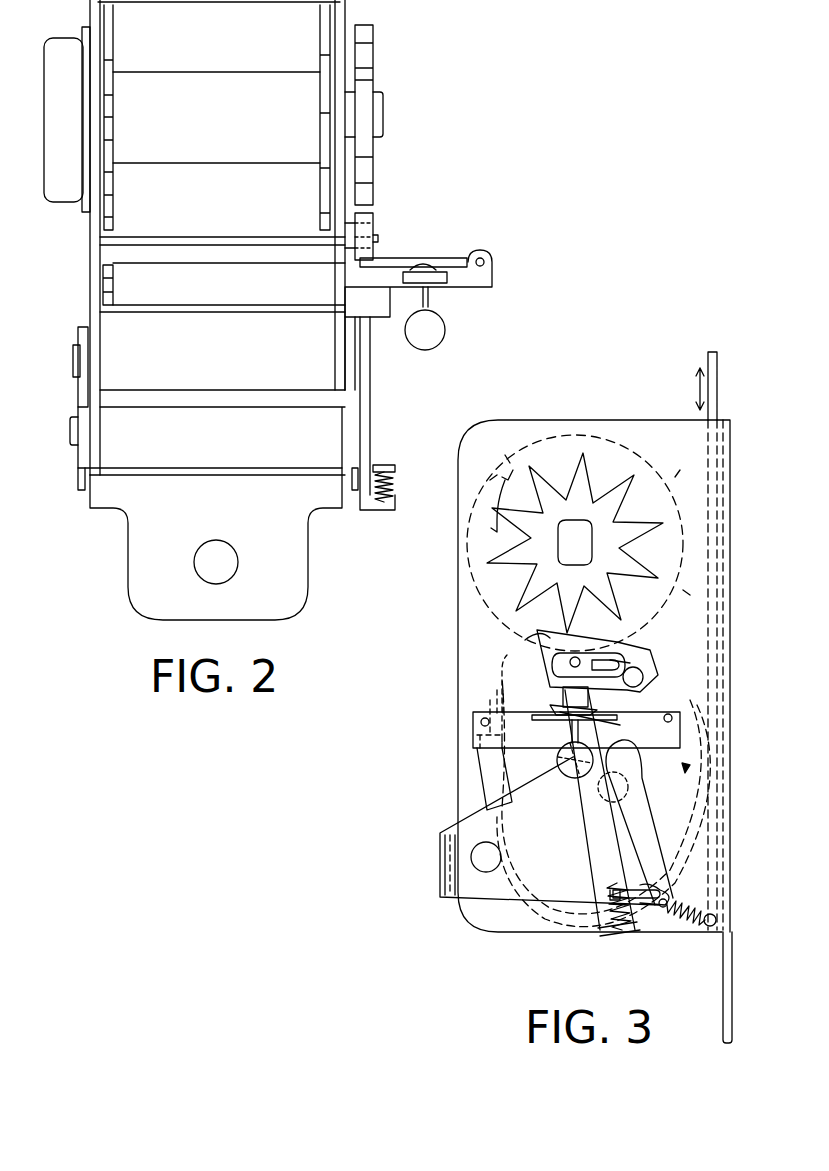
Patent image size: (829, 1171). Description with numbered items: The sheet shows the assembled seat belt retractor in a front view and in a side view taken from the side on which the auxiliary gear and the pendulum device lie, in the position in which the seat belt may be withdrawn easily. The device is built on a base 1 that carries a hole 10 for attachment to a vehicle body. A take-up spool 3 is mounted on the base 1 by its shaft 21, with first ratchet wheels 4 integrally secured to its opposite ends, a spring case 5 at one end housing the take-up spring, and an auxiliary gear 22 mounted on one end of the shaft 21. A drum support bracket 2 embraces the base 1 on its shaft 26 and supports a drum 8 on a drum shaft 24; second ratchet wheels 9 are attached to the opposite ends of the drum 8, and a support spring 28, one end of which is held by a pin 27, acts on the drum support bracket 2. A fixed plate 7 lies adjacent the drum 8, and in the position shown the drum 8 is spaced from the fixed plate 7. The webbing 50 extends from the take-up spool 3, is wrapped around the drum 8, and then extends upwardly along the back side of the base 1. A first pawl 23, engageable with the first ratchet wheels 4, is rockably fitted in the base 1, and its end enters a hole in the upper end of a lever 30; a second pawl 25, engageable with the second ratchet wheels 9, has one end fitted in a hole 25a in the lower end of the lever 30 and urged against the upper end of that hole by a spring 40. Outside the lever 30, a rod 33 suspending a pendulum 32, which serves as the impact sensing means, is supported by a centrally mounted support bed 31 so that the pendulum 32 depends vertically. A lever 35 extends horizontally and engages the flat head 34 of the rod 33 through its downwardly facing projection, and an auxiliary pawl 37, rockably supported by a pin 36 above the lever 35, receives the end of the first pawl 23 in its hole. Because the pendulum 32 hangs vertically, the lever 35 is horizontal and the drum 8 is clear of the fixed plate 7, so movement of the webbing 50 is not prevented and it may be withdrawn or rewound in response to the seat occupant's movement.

In FIG. 2, the base 1 is at (128, 535).
In FIG. 3, the base 1 is at (553, 420).
In FIG. 2, the drum support bracket 2 is at (225, 467).
In FIG. 3, the drum support bracket 2 is at (440, 862).
In FIG. 2, the take-up spool 3 is at (202, 77).
In FIG. 2, the first ratchet wheels 4 is at (113, 51).
In FIG. 3, the first ratchet wheels 4 is at (603, 440).
In FIG. 2, the spring case 5 is at (66, 44).
In FIG. 2, the fixed plate 7 is at (108, 327).
In FIG. 3, the fixed plate 7 is at (485, 782).
In FIG. 2, the drum 8 is at (275, 245).
In FIG. 3, the drum 8 is at (685, 726).
In FIG. 2, the second ratchet wheels 9 is at (103, 270).
In FIG. 3, the second ratchet wheels 9 is at (675, 855).
In FIG. 2, the hole 10 is at (225, 575).
In FIG. 3, the hole 10 is at (722, 997).
In FIG. 2, the shaft 21 is at (383, 107).
In FIG. 3, the shaft 21 is at (580, 529).
In FIG. 2, the auxiliary gear 22 is at (366, 32).
In FIG. 3, the auxiliary gear 22 is at (622, 477).
In FIG. 2, the first pawl 23 is at (192, 237).
In FIG. 3, the first pawl 23 is at (623, 650).
In FIG. 2, the drum shaft 24 is at (73, 357).
In FIG. 3, the drum shaft 24 is at (622, 798).
In FIG. 3, the second pawl 25 is at (652, 910).
In FIG. 3, the hole 25a is at (600, 930).
In FIG. 2, the shaft of the drum support bracket 26 is at (73, 428).
In FIG. 3, the shaft of the drum support bracket 26 is at (492, 866).
In FIG. 3, the pin 27 is at (718, 920).
In FIG. 3, the support spring 28 is at (685, 920).
In FIG. 2, the lever 30 is at (372, 400).
In FIG. 3, the lever 30 is at (592, 830).
In FIG. 2, the support bed 31 is at (490, 283).
In FIG. 3, the support bed 31 is at (652, 745).
In FIG. 2, the pendulum 32 is at (432, 343).
In FIG. 3, the pendulum 32 is at (570, 772).
In FIG. 2, the rod 33 is at (430, 300).
In FIG. 3, the rod 33 is at (570, 735).
In FIG. 2, the flat head 34 is at (445, 275).
In FIG. 3, the flat head 34 is at (555, 707).
In FIG. 2, the lever 35 is at (444, 258).
In FIG. 3, the lever 35 is at (562, 692).
In FIG. 3, the pin 36 is at (648, 680).
In FIG. 2, the auxiliary pawl 37 is at (372, 212).
In FIG. 3, the auxiliary pawl 37 is at (642, 661).
In FIG. 2, the spring 40 is at (395, 490).
In FIG. 3, the spring 40 is at (625, 928).
In FIG. 3, the webbing 50 is at (708, 358).